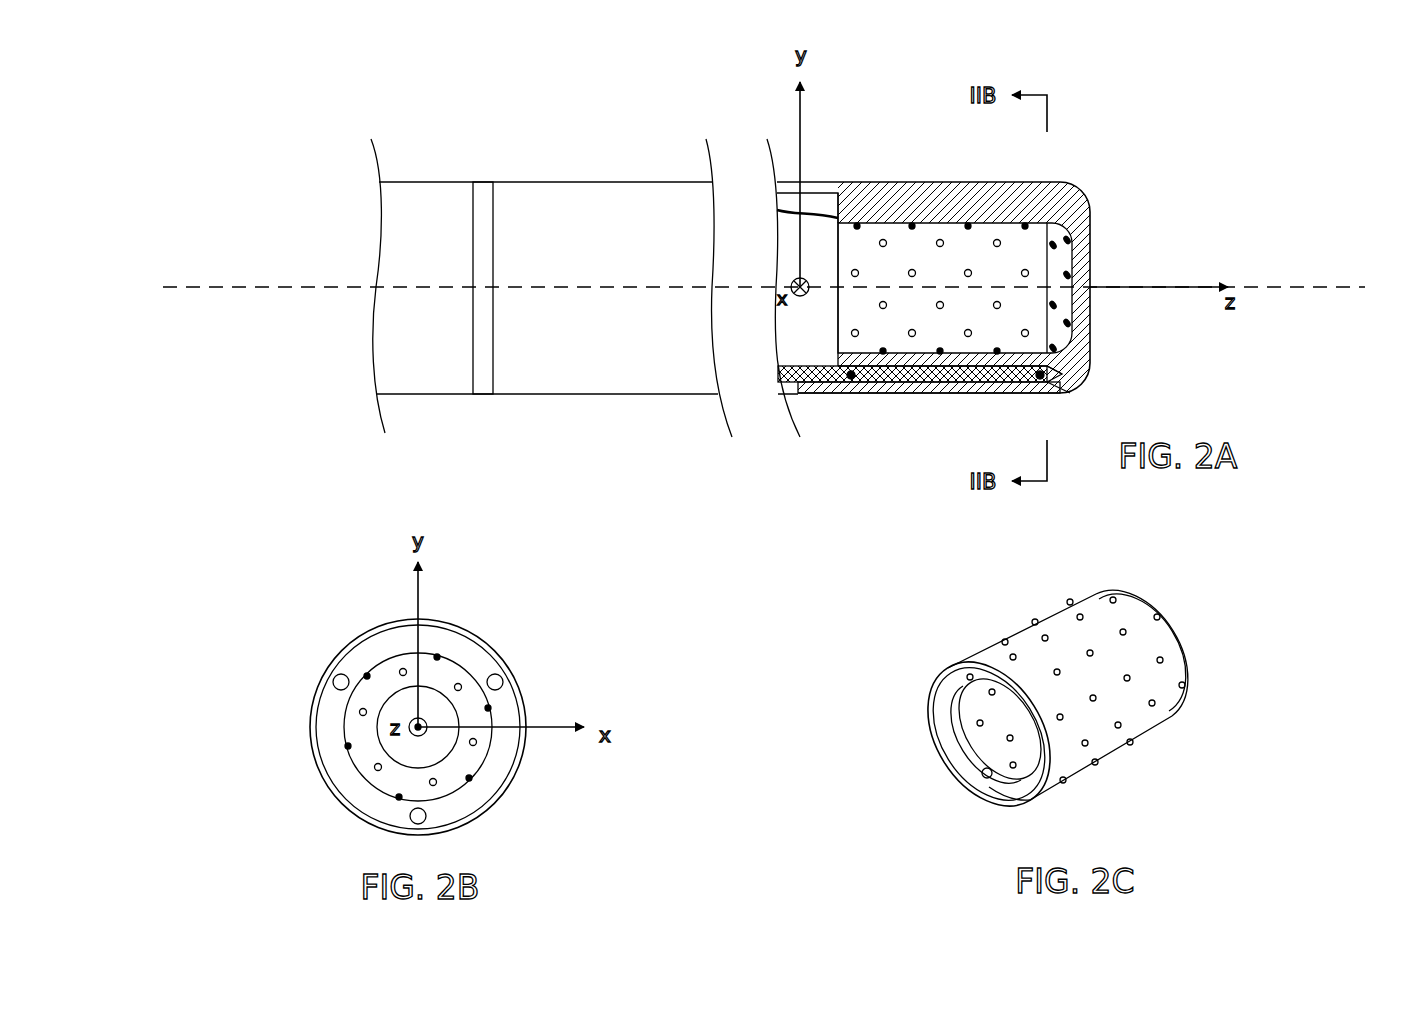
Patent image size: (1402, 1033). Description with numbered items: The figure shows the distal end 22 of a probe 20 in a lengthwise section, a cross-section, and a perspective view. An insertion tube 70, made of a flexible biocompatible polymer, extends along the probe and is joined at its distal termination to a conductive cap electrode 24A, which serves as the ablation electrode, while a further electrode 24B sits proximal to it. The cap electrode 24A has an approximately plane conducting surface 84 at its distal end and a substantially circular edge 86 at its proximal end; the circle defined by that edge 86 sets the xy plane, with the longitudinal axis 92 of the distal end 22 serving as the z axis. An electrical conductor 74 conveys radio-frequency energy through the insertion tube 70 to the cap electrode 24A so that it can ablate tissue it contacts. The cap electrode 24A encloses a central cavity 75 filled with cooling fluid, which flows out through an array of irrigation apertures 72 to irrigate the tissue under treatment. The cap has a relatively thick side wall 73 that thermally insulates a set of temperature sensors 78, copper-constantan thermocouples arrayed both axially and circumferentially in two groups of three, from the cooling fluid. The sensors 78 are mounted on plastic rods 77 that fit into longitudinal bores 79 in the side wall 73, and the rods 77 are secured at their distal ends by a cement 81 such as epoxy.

In FIG. 2A, the probe 20 is at (422, 182).
In FIG. 2A, the distal end 22 is at (571, 85).
In FIG. 2A, the conductive cap electrode 24A is at (878, 182).
In FIG. 2B, the conductive cap electrode 24A is at (477, 637).
In FIG. 2C, the conductive cap electrode 24A is at (1017, 623).
In FIG. 2A, the electrode 24B is at (477, 182).
In FIG. 2A, the insertion tube 70 is at (428, 394).
In FIG. 2A, the irrigation apertures 72 is at (897, 312).
In FIG. 2B, the irrigation apertures 72 is at (398, 796).
In FIG. 2C, the irrigation apertures 72 is at (1126, 632).
In FIG. 2A, the side wall 73 is at (940, 198).
In FIG. 2B, the side wall 73 is at (510, 712).
In FIG. 2C, the side wall 73 is at (955, 727).
In FIG. 2A, the electrical conductor 74 is at (825, 187).
In FIG. 2B, the central cavity 75 is at (405, 763).
In FIG. 2A, the rods 77 is at (945, 382).
In FIG. 2A, the temperature sensors 78 is at (851, 379).
In FIG. 2B, the longitudinal bores 79 is at (333, 687).
In FIG. 2C, the longitudinal bores 79 is at (982, 773).
In FIG. 2A, the cement 81 is at (1068, 388).
In FIG. 2A, the plane conducting surface 84 is at (1090, 236).
In FIG. 2A, the circular edge 86 is at (800, 393).
In FIG. 2C, the circular edge 86 is at (1008, 813).
In FIG. 2A, the axis 92 is at (193, 290).